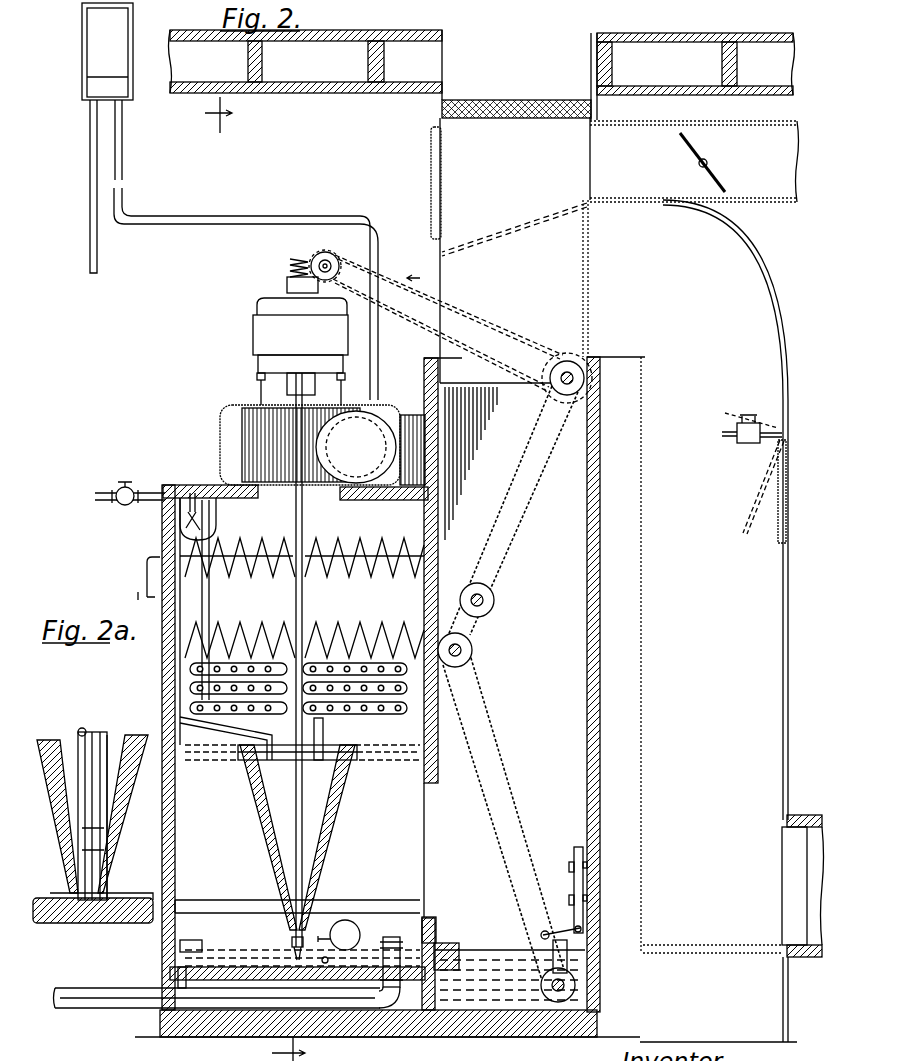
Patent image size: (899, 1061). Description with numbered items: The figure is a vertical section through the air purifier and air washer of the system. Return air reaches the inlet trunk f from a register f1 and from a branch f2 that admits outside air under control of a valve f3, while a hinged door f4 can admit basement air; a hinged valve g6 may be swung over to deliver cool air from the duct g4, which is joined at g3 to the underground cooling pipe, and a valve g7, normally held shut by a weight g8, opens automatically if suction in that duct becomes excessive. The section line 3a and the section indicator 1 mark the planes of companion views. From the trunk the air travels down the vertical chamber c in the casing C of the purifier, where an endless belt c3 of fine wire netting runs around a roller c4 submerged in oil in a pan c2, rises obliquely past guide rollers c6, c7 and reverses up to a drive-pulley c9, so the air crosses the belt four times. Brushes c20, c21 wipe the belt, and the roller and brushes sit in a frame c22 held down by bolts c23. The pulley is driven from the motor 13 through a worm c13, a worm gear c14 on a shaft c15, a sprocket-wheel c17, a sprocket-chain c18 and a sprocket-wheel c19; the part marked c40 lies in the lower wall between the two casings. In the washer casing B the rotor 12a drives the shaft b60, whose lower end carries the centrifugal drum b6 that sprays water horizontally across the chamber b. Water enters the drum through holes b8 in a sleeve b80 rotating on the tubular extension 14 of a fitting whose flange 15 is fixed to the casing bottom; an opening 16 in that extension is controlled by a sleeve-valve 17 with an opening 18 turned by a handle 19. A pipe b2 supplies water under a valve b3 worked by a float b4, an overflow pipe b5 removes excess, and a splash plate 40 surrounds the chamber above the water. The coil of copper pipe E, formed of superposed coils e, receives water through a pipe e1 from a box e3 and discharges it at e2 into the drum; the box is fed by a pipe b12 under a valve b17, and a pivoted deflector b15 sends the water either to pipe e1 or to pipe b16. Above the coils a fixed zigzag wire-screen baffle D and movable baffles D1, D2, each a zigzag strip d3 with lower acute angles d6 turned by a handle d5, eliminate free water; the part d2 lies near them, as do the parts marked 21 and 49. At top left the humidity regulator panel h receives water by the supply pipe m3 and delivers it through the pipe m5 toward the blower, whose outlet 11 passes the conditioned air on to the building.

In FIG. 2, the panel h is at (90, 52).
In FIG. 2, the supply pipe m3 is at (97, 255).
In FIG. 2, the pipe m5 is at (230, 222).
In FIG. 2, the section line 1 is at (254, 579).
In FIG. 2, the register f1 is at (565, 42).
In FIG. 2, the branch f2 is at (694, 160).
In FIG. 2, the valve f3 is at (703, 163).
In FIG. 2, the hinged door f4 is at (430, 150).
In FIG. 2, the air inlet trunk f is at (445, 252).
In FIG. 2, the hinged valve g6 is at (590, 256).
In FIG. 2, the casing C is at (600, 605).
In FIG. 2, the section line 3a is at (140, 540).
In FIG. 2, the duct g4 is at (718, 621).
In FIG. 2, the connection g3 is at (805, 815).
In FIG. 2, the weight g8 is at (748, 443).
In FIG. 2, the valve g7 is at (778, 520).
In FIG. 2, the electric motor 13 is at (300, 351).
In FIG. 2, the worm c13 is at (292, 268).
In FIG. 2, the worm gear c14 is at (332, 258).
In FIG. 2, the sprocket-wheel c17 is at (312, 258).
In FIG. 2, the shaft c15 is at (380, 292).
In FIG. 2, the sprocket-chain c18 is at (412, 322).
In FIG. 2, the rotor 12a is at (250, 385).
In FIG. 2, the outlet 11 is at (322, 500).
In FIG. 2, the casing B is at (175, 853).
In FIG. 2, the pivoted deflector b15 is at (190, 490).
In FIG. 2, the pipe b16 is at (225, 772).
In FIG. 2, the valve b17 is at (128, 505).
In FIG. 2, the handle d5 is at (160, 557).
In FIG. 2, the pipe b12 is at (215, 505).
In FIG. 2, the box e3 is at (220, 525).
In FIG. 2, the shaft b60 is at (245, 506).
In FIG. 2A, the shaft b60 is at (80, 735).
In FIG. 2, the movable baffle D1 is at (237, 543).
In FIG. 2, the movable baffle D2 is at (395, 548).
In FIG. 2, the plate d2 is at (340, 545).
In FIG. 2, the lower acute angles d6 is at (327, 594).
In FIG. 2, the strip of wire netting d3 is at (365, 570).
In FIG. 2, the overflow pipe b5 is at (210, 605).
In FIG. 2, the fixed baffle D is at (300, 600).
In FIG. 2, the pipe e1 is at (265, 605).
In FIG. 2, the chamber b is at (298, 673).
In FIG. 2, the coil of copper pipe E is at (262, 715).
In FIG. 2, the extension e2 is at (325, 722).
In FIG. 2, the coils e is at (395, 715).
In FIG. 2, the centrifugal drum b6 is at (258, 812).
In FIG. 2A, the centrifugal drum b6 is at (48, 742).
In FIG. 2, the spray 21 is at (414, 812).
In FIG. 2, the splash plate 40 is at (215, 905).
In FIG. 2, the handle 19 is at (325, 957).
In FIG. 2, the valve b3 is at (200, 943).
In FIG. 2, the float b4 is at (362, 938).
In FIG. 2, the pipe b2 is at (95, 990).
In FIG. 2, the bracket 49 is at (160, 905).
In FIG. 2, the drive-pulley c9 is at (583, 365).
In FIG. 2, the sprocket-wheel c19 is at (551, 376).
In FIG. 2, the endless belt c3 is at (533, 478).
In FIG. 2, the roller c7 is at (495, 600).
In FIG. 2, the roller c6 is at (472, 660).
In FIG. 2, the vertical chamber c is at (542, 647).
In FIG. 2, the roller c4 is at (555, 1000).
In FIG. 2, the pan c2 is at (440, 958).
In FIG. 2, the opening c40 is at (428, 880).
In FIG. 2, the brush c20 is at (573, 930).
In FIG. 2, the brush c21 is at (565, 930).
In FIG. 2, the frame c22 is at (580, 850).
In FIG. 2, the bolts c23 is at (590, 925).
In FIG. 2A, the sleeve b80 is at (120, 742).
In FIG. 2A, the holes b8 is at (118, 830).
In FIG. 2A, the sleeve-valve 17 is at (75, 870).
In FIG. 2A, the flange 15 is at (72, 892).
In FIG. 2A, the tubular extension 14 is at (105, 870).
In FIG. 2A, the opening 16 is at (105, 882).
In FIG. 2A, the opening 18 is at (108, 893).